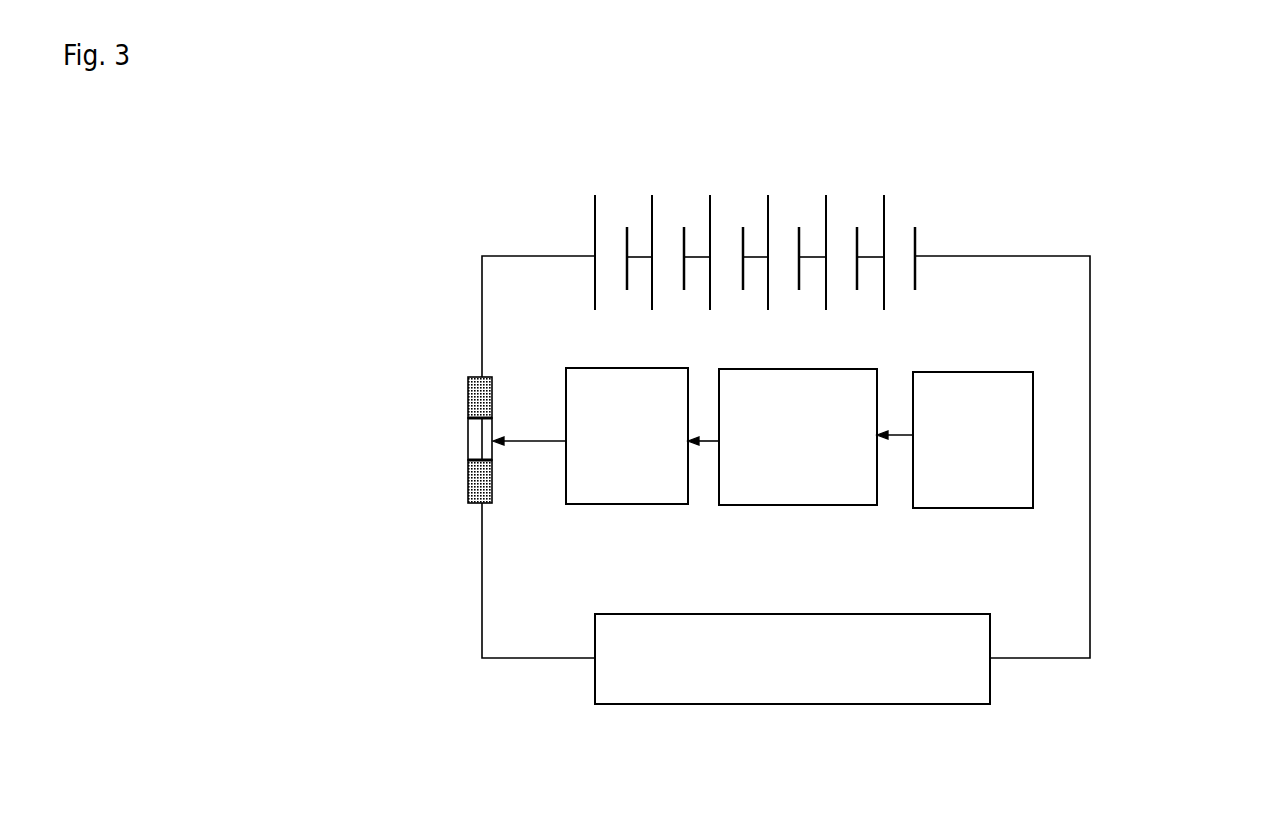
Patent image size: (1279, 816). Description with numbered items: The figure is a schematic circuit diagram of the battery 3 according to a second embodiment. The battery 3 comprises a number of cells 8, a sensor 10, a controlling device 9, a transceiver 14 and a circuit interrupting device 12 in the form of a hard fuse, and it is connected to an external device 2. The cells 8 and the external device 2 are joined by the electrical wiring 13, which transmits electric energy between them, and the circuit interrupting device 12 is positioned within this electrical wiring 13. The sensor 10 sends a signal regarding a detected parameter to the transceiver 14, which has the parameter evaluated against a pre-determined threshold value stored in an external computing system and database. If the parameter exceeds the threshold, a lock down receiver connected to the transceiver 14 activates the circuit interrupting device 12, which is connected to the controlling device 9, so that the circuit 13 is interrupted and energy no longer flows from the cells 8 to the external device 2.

The external device 2 is at (898, 691).
The battery 3 is at (1179, 229).
The cells 8 is at (914, 172).
The controlling device 9 is at (583, 395).
The sensor 10 is at (1019, 408).
The circuit interrupting device 12 is at (473, 447).
The electrical wiring 13 is at (478, 573).
The transceiver 14 is at (758, 467).